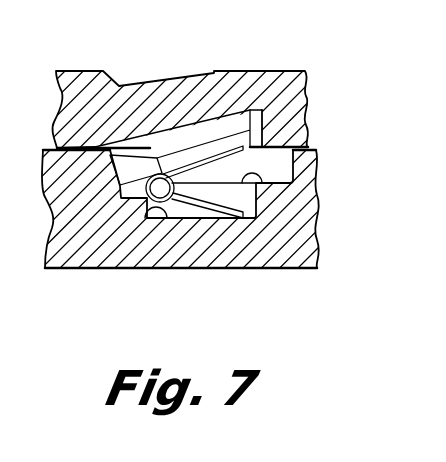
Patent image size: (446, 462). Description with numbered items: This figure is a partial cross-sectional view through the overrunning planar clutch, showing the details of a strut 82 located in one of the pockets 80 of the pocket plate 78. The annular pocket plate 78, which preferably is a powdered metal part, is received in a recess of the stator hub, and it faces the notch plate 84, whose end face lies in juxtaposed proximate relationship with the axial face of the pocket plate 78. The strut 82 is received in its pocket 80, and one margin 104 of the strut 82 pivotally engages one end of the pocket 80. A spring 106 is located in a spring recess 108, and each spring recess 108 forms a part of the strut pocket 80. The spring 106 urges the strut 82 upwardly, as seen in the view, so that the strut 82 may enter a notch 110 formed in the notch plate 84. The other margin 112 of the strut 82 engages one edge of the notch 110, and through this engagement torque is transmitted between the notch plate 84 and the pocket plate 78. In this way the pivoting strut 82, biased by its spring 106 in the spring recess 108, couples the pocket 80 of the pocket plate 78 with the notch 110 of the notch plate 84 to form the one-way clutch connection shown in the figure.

The pocket plate 78 is at (287, 217).
The pocket 80 is at (242, 184).
The strut 82 is at (196, 145).
The notch plate 84 is at (288, 124).
The margin of the strut 104 is at (114, 186).
The spring 106 is at (196, 218).
The spring recess 108 is at (140, 214).
The notch 110 is at (167, 128).
The other margin of the strut 112 is at (268, 122).